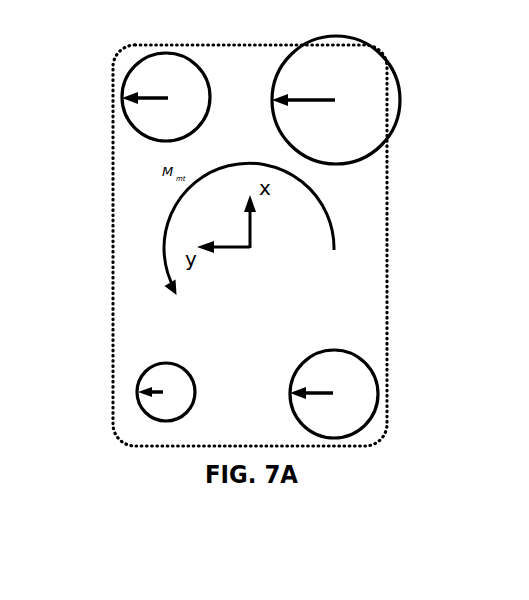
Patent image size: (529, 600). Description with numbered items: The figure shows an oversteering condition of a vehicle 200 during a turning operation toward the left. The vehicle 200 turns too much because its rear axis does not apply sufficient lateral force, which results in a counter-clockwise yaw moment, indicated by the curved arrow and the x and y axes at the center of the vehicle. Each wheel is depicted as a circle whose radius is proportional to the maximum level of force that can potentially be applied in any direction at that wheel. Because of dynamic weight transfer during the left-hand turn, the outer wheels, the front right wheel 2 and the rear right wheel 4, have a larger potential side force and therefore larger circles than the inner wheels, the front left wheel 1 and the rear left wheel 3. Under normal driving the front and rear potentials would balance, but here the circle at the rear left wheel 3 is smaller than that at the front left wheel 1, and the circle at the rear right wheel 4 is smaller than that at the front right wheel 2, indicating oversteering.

The vehicle 200 is at (387, 241).
The front left wheel 1 is at (166, 97).
The front right wheel 2 is at (336, 100).
The rear left wheel 3 is at (166, 392).
The rear right wheel 4 is at (334, 394).